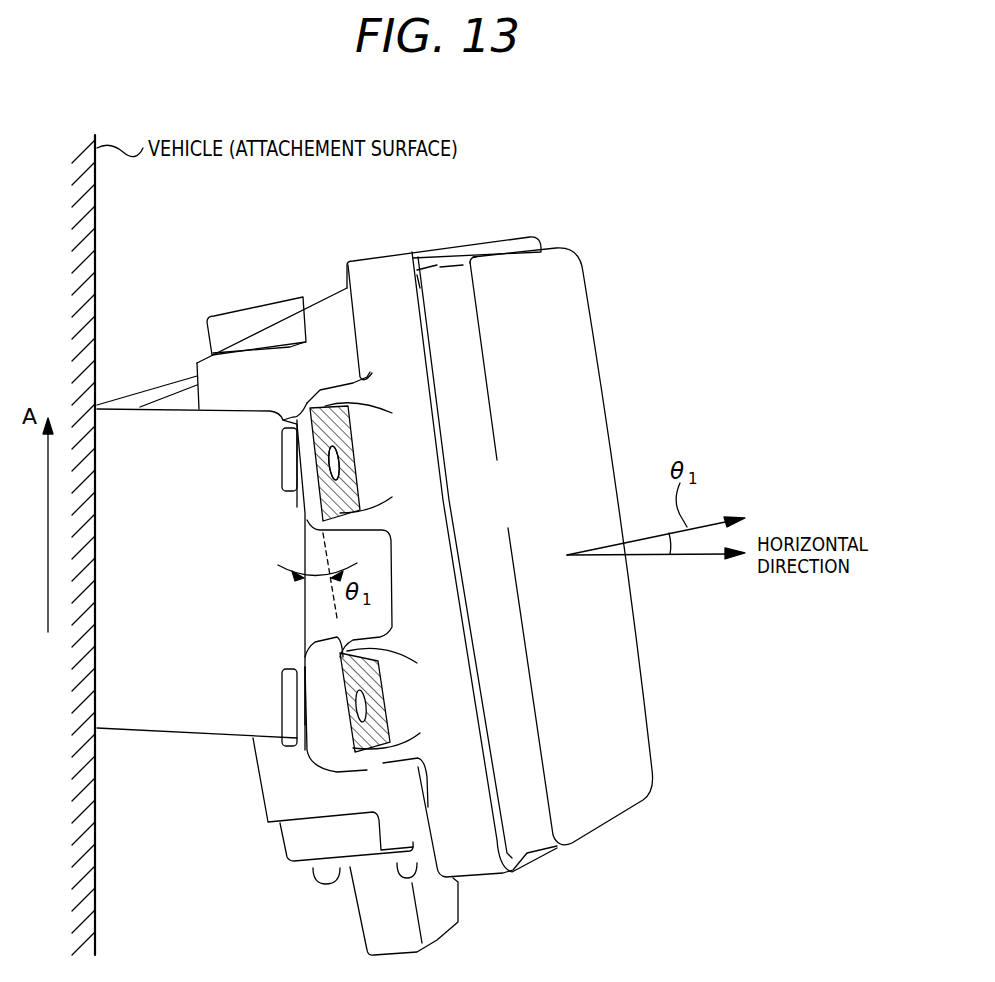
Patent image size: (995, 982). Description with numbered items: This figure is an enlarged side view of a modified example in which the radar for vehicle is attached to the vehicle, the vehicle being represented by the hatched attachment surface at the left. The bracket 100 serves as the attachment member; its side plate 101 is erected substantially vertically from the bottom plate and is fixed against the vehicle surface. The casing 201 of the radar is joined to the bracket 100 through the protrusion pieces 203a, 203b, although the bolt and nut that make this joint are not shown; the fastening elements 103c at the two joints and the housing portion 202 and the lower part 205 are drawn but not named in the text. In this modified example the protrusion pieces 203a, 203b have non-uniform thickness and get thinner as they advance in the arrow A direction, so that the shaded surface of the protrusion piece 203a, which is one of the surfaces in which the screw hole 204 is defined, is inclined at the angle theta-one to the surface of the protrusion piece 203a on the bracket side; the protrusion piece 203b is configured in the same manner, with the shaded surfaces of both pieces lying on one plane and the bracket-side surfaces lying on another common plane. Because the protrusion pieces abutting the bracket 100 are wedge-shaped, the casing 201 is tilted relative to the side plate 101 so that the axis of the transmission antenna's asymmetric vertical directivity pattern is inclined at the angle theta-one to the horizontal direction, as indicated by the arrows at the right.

The bracket 100 is at (150, 372).
The side plate 101 is at (150, 720).
The screw / washer 103c is at (295, 462).
The casing 201 is at (325, 296).
The camera housing 202 is at (638, 745).
The protrusion piece 203a is at (335, 505).
The protrusion piece 203b is at (365, 740).
The screw hole 204 is at (340, 463).
The connector 205 is at (450, 910).